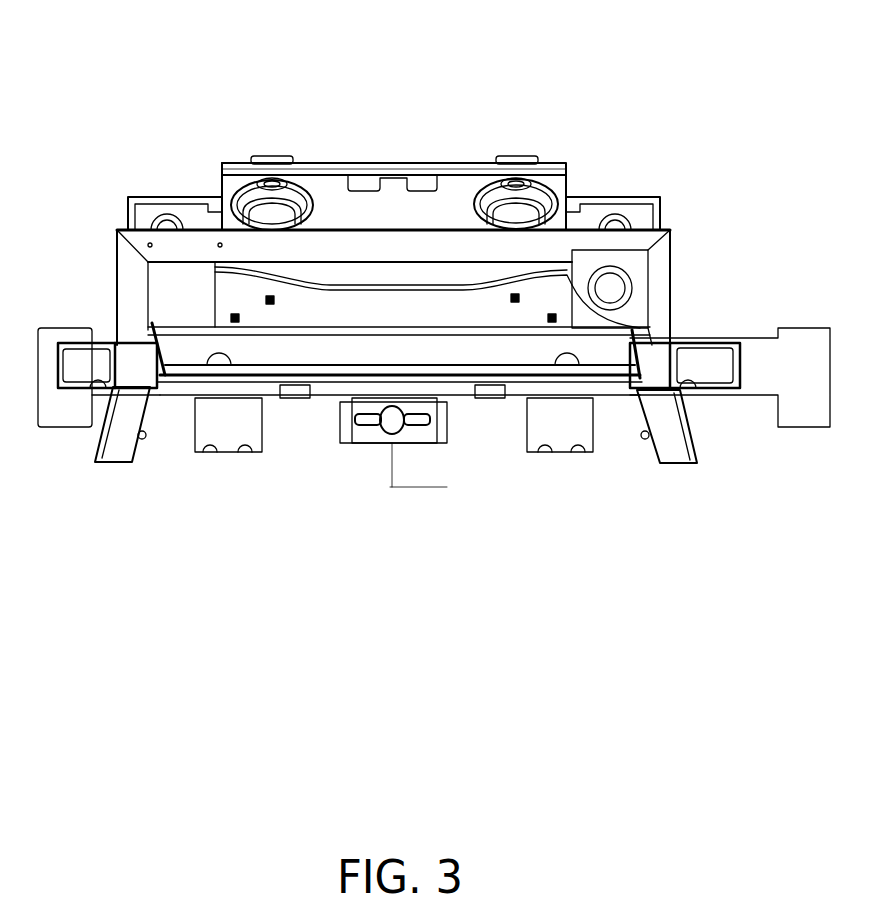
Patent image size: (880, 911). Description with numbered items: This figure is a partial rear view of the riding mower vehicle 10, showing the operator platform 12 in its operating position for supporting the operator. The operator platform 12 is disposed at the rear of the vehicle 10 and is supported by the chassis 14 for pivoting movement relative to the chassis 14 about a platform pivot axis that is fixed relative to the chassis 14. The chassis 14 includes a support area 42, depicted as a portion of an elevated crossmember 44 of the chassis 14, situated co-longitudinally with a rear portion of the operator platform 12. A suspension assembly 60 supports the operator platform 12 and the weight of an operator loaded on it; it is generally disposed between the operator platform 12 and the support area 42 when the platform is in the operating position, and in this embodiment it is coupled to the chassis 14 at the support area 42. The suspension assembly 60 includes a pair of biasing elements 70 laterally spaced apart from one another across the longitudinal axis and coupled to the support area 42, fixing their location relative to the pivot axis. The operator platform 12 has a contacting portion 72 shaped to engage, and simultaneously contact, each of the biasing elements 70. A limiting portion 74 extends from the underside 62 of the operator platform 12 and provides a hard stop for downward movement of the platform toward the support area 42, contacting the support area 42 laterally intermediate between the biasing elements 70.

The vehicle 10 is at (194, 106).
The operator platform 12 is at (398, 168).
The chassis 14 is at (240, 386).
The support area 42 is at (422, 248).
The elevated crossmember 44 is at (668, 260).
The suspension assembly 60 is at (200, 187).
The underside 62 is at (226, 155).
The biasing elements 70 is at (570, 188).
The contacting portion 72 is at (513, 173).
The limiting portion 74 is at (368, 188).